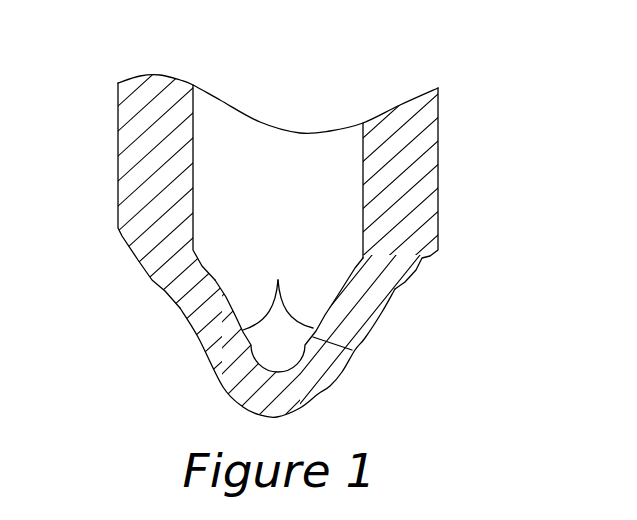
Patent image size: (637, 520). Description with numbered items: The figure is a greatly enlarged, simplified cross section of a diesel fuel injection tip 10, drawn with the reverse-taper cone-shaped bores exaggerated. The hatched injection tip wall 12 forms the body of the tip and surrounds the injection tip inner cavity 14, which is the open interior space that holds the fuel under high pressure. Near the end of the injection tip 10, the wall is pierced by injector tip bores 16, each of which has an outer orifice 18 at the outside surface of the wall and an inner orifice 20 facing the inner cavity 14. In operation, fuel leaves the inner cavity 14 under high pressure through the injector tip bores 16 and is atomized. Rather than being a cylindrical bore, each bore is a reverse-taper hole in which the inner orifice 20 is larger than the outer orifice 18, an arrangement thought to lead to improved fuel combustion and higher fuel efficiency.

The diesel fuel injection tip 10 is at (368, 76).
The injection tip wall 12 is at (427, 186).
The injection tip inner cavity 14 is at (243, 127).
The injector tip bores 16 is at (218, 340).
The outer orifice 18 is at (243, 330).
The inner orifice 20 is at (278, 289).